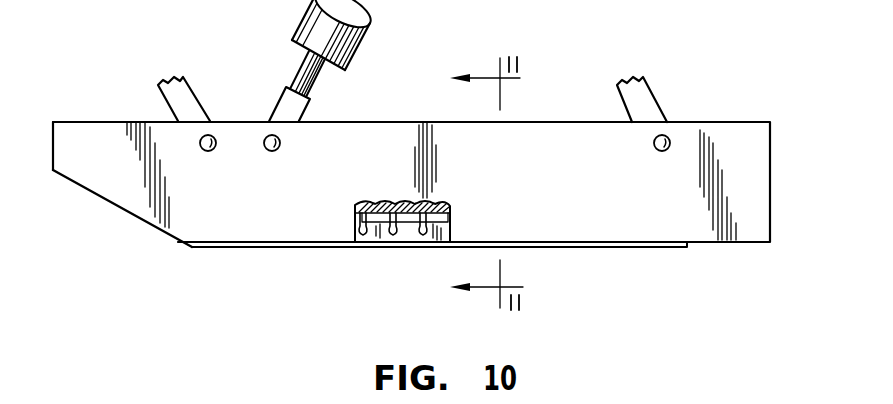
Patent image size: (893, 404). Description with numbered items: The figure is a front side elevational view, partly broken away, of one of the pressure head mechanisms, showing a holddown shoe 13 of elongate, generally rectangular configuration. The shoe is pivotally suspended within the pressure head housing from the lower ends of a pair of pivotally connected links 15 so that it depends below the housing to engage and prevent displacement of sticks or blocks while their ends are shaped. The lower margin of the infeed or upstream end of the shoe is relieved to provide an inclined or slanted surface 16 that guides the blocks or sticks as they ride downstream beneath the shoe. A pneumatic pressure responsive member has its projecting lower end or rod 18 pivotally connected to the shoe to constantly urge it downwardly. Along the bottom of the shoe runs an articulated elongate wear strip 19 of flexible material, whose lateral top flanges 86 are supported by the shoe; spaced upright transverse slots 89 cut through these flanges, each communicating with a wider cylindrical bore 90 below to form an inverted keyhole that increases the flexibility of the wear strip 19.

The holddown shoe 13 is at (735, 123).
The pivotally connected links 15 is at (192, 100).
The inclined surface 16 is at (118, 208).
The rod 18 is at (320, 70).
The wear strip 19 is at (591, 247).
The lateral top flanges 86 is at (438, 204).
The transverse slots 89 is at (356, 220).
The cylindrical bore 90 is at (397, 237).